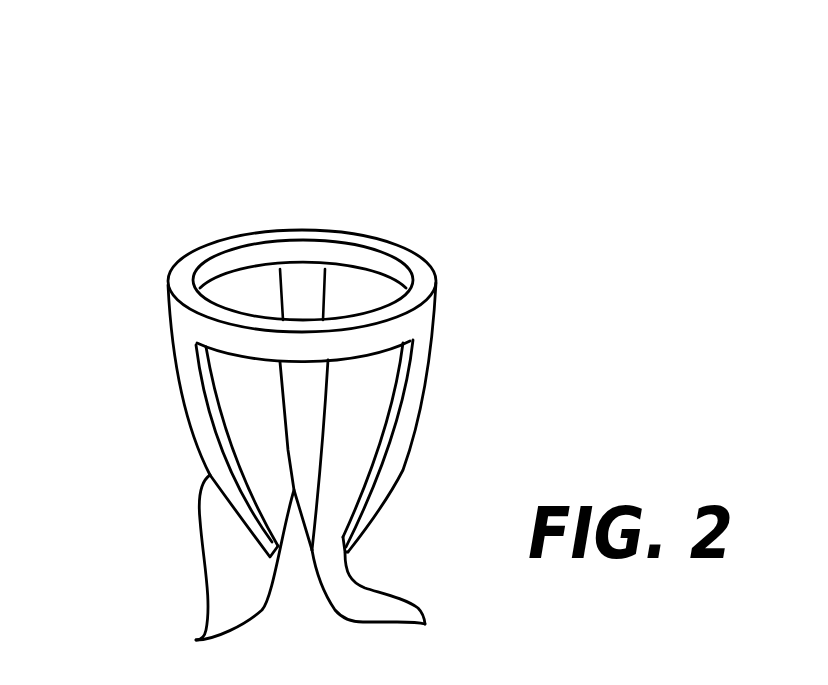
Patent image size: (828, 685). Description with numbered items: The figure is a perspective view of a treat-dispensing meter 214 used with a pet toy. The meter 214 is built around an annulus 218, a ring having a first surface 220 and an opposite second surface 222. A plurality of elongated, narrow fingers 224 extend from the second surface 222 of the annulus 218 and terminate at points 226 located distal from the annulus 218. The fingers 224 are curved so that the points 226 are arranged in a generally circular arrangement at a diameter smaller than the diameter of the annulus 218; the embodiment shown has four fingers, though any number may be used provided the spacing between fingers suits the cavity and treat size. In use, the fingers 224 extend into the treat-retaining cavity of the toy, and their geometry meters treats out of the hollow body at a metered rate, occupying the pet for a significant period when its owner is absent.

The meter 214 is at (213, 160).
The annulus 218 is at (412, 323).
The first surface 220 is at (413, 260).
The second surface 222 is at (367, 353).
The fingers 224 is at (197, 640).
The points 226 is at (425, 624).